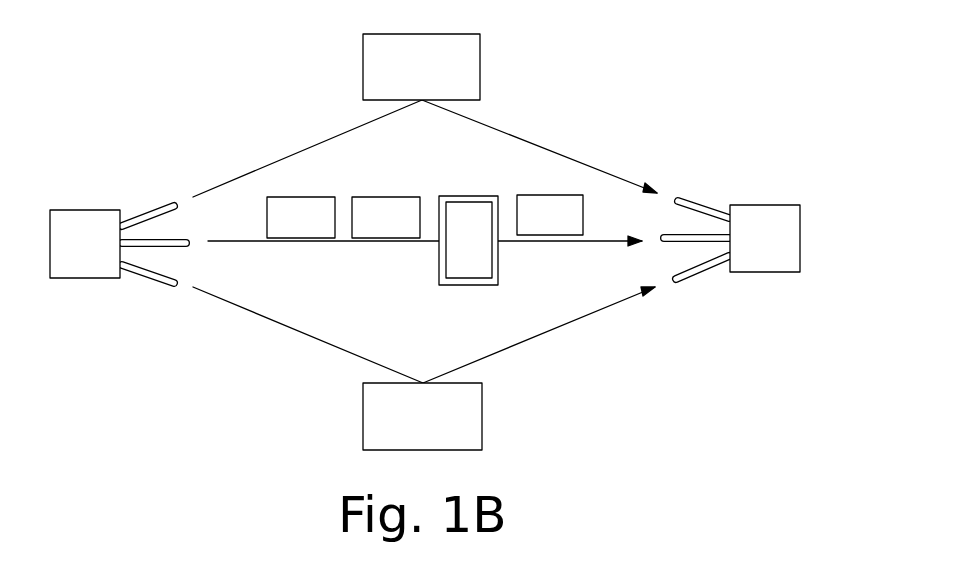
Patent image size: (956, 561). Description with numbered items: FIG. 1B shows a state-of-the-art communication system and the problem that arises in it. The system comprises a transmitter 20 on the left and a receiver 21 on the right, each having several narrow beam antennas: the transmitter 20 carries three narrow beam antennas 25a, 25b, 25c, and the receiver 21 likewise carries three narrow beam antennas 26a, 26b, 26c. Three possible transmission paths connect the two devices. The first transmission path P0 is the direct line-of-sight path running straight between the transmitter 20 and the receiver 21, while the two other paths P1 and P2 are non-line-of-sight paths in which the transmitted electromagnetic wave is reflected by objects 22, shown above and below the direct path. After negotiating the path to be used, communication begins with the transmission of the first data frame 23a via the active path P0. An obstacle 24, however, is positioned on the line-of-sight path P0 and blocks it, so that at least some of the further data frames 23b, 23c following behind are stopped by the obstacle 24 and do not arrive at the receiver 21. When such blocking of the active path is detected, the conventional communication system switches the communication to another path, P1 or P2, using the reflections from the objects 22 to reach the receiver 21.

The transmitter 20 is at (98, 258).
The receiver 21 is at (778, 257).
The objects 22 is at (433, 82).
The first data frame 23a is at (568, 229).
The data frame 23b is at (403, 232).
The data frame 23c is at (318, 232).
The obstacle 24 is at (481, 252).
The narrow beam antenna 25a is at (147, 203).
The narrow beam antenna 25b is at (190, 245).
The narrow beam antenna 25c is at (150, 284).
The narrow beam antenna 26a is at (705, 202).
The narrow beam antenna 26b is at (660, 241).
The narrow beam antenna 26c is at (695, 283).
The first transmission path P0 is at (393, 244).
The transmission path P1 is at (575, 158).
The transmission path P2 is at (548, 333).